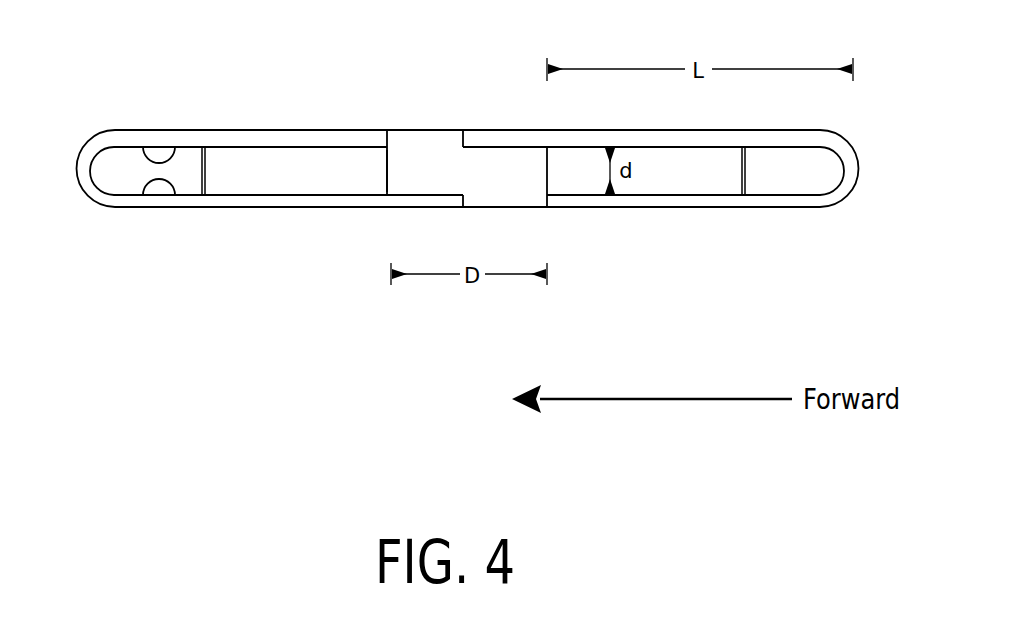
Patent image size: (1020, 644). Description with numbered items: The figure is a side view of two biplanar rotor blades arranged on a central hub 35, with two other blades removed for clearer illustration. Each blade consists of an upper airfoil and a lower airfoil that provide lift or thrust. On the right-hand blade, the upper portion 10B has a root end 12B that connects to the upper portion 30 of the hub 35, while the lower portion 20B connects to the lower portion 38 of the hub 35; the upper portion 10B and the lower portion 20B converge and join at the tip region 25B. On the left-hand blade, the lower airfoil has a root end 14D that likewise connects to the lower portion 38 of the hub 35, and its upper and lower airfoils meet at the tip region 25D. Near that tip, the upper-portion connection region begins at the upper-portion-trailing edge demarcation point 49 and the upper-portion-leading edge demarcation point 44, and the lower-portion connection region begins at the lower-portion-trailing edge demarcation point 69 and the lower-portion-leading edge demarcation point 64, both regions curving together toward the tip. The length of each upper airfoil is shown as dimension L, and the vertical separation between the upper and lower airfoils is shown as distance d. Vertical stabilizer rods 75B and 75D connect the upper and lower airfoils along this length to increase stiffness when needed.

The upper portion 10B is at (768, 142).
The root end 12B is at (521, 137).
The root end 14D is at (412, 203).
The lower portion 20B is at (694, 201).
The tip region 25B is at (843, 168).
The tip region 25D is at (90, 168).
The upper portion of hub 30 is at (420, 135).
The hub 35 is at (410, 170).
The lower portion of hub 38 is at (485, 200).
The upper-portion-leading edge demarcation point 44 is at (175, 148).
The upper-portion-trailing edge demarcation point 49 is at (143, 130).
The lower-portion-leading edge demarcation point 64 is at (175, 193).
The lower-portion-trailing edge demarcation point 69 is at (143, 207).
The stabilizer rod 75B is at (745, 168).
The stabilizer rod 75D is at (205, 170).